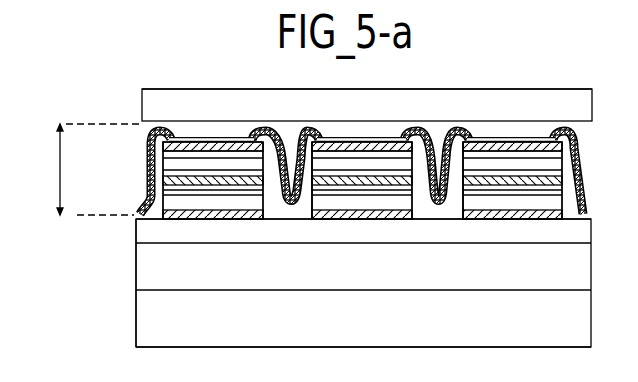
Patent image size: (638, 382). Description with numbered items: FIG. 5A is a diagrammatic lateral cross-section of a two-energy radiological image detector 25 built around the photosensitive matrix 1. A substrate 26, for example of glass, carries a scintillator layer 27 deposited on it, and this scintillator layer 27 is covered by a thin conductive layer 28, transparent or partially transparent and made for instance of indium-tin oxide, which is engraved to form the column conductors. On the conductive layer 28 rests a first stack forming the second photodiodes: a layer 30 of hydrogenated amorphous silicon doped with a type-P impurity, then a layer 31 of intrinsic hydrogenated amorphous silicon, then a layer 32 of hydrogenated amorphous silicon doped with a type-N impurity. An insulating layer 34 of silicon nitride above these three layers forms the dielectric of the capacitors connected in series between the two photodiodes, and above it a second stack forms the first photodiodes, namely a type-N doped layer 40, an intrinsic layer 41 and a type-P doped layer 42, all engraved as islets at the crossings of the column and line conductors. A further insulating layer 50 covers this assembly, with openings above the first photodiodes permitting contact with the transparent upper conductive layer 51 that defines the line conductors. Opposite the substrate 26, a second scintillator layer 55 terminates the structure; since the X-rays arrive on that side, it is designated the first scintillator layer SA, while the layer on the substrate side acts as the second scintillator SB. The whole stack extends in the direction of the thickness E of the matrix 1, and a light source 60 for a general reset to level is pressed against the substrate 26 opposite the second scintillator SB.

The matrix 1 is at (127, 177).
The two-energy radiological image detector 25 is at (80, 314).
The substrate 26 is at (583, 275).
The scintillator layer 27 is at (584, 232).
The thin conductive layer 28 is at (218, 207).
The layer of hydrogenated amorphous silicon doped with a type-P impurity 30 is at (267, 194).
The layer of intrinsic hydrogenated amorphous silicon 31 is at (179, 218).
The layer of hydrogenated amorphous silicon doped with a type-N impurity 32 is at (301, 200).
The insulating layer 34 is at (140, 188).
The layer of hydrogenated amorphous silicon doped with a type-N impurity 40 is at (583, 180).
The layer of intrinsic hydrogenated amorphous silicon 41 is at (575, 168).
The layer of hydrogenated amorphous silicon doped with a type-P impurity 42 is at (234, 151).
The insulating layer 50 is at (181, 142).
The upper conductive layer 51 is at (149, 133).
The second scintillator layer 55 is at (142, 100).
The light source 60 is at (143, 330).
The thickness E is at (91, 169).
The first scintillator layer SA is at (144, 89).
The second scintillator SB is at (137, 239).